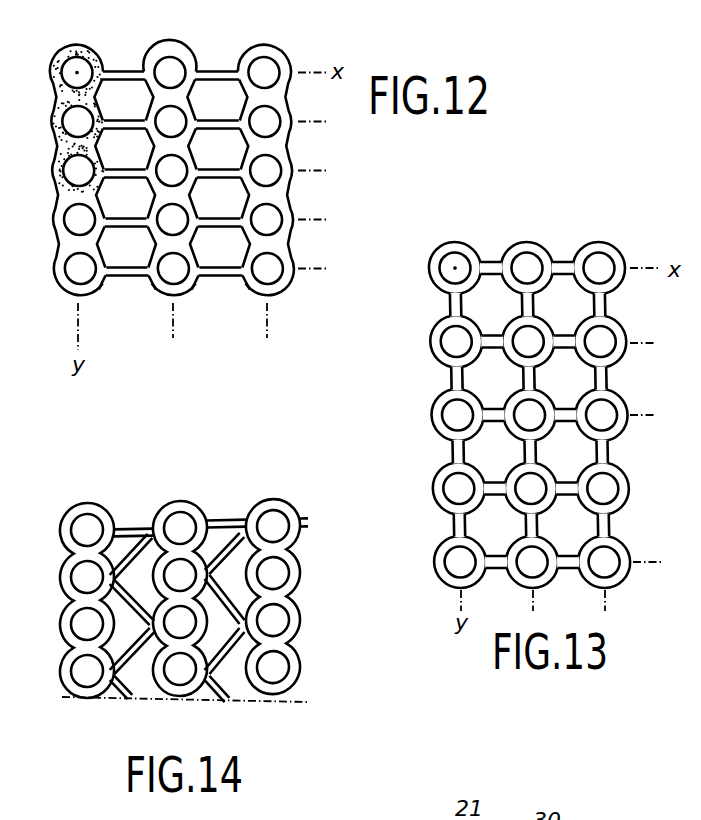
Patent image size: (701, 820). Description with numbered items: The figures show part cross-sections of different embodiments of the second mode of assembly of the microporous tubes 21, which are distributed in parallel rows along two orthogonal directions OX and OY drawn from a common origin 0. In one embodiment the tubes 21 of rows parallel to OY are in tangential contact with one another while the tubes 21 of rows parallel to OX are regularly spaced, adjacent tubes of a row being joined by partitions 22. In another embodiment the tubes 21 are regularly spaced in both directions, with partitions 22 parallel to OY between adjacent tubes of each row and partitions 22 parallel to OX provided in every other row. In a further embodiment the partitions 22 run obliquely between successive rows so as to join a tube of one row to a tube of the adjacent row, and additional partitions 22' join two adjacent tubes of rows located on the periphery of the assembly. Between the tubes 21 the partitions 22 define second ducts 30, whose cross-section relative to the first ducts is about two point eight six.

In FIG. 12, the origin of orthogonal directions OX and OY 0 is at (75, 75).
In FIG. 13, the origin of orthogonal directions OX and OY 0 is at (455, 268).
In FIG. 12, the microporous tubes 21 is at (158, 60).
In FIG. 13, the microporous tubes 21 is at (582, 248).
In FIG. 14, the microporous tubes 21 is at (257, 507).
In FIG. 12, the partitions 22 is at (196, 143).
In FIG. 13, the partitions 22 is at (477, 415).
In FIG. 14, the partitions 22 is at (123, 571).
In FIG. 14, the partitions 22' is at (211, 492).
In FIG. 12, the second ducts 30 is at (135, 257).
In FIG. 13, the second ducts 30 is at (562, 453).
In FIG. 14, the second ducts 30 is at (225, 622).